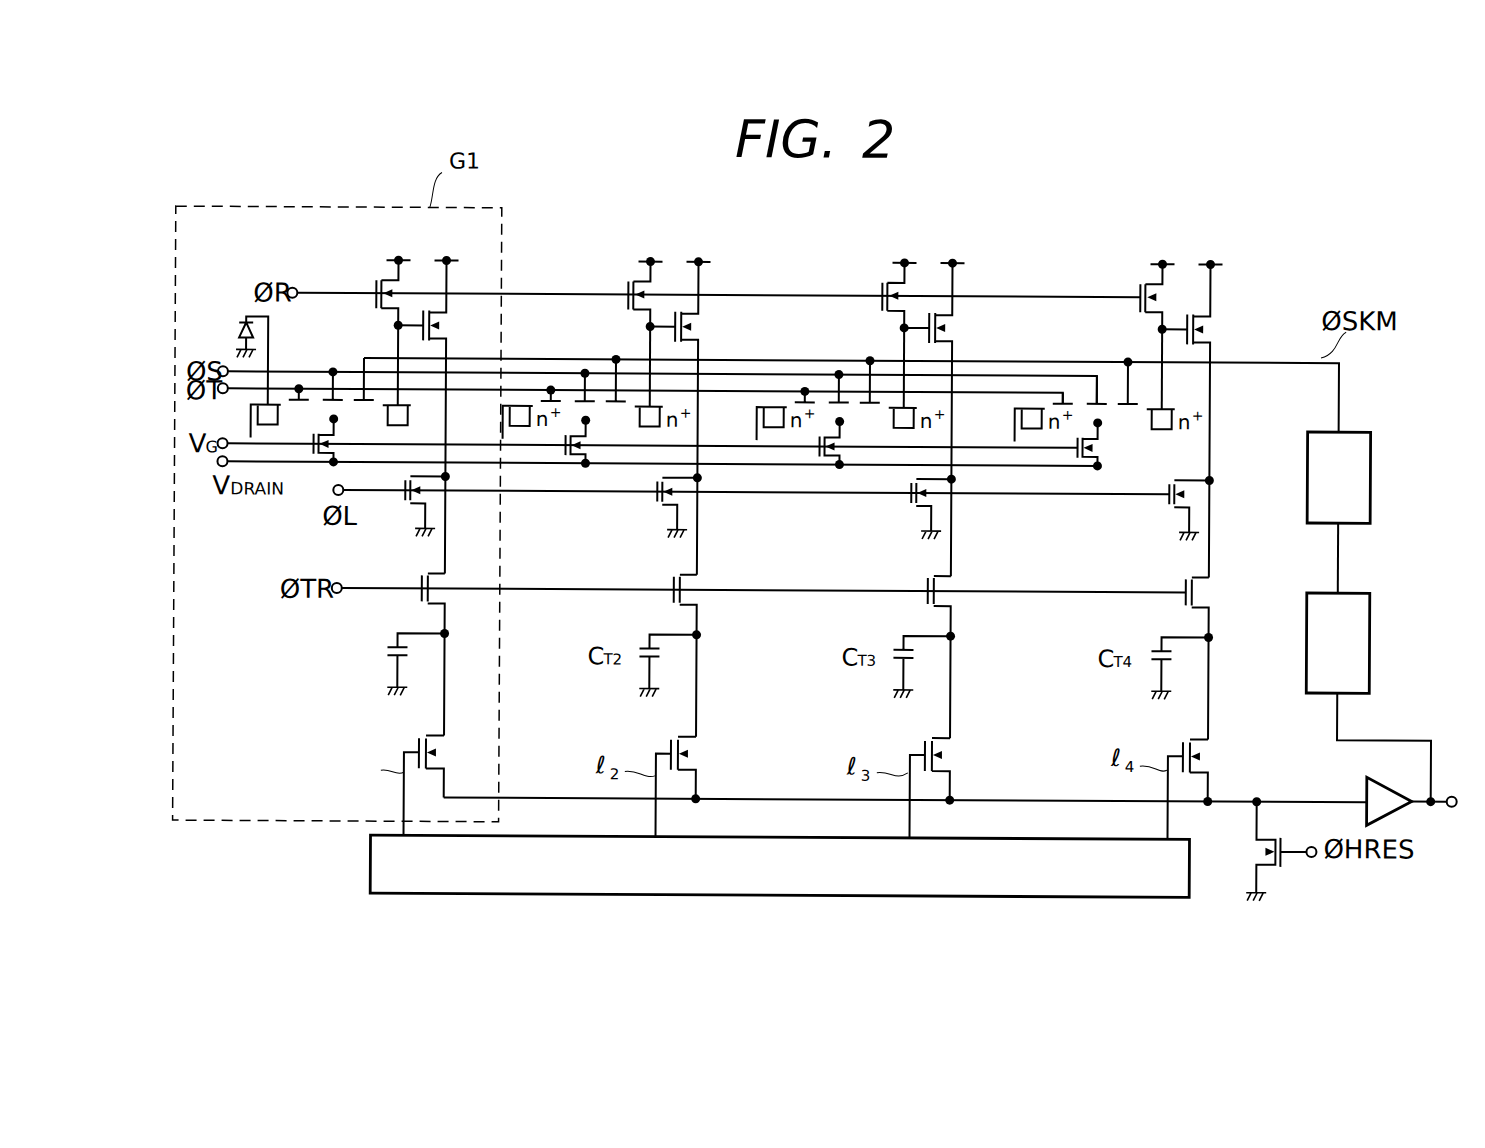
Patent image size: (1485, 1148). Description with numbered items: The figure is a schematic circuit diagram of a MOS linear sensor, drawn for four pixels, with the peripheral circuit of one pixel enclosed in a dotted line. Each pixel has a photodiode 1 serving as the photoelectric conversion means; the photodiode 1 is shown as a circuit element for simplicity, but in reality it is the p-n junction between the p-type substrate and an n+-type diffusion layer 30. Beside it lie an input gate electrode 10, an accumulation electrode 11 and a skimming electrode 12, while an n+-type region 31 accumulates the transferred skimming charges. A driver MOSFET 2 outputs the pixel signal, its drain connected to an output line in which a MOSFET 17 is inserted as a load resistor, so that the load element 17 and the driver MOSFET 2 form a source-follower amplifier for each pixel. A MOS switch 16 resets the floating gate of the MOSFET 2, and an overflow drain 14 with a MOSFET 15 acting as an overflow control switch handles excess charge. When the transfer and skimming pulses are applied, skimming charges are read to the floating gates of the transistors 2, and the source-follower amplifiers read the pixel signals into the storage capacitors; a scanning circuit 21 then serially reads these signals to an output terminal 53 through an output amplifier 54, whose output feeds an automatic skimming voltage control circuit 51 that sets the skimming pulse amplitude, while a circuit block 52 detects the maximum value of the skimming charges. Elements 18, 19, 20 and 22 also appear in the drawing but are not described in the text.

The photodiode 1 is at (240, 330).
The driver MOSFET 2 is at (447, 326).
The input gate electrode 10 is at (294, 398).
The accumulation electrode 11 is at (332, 370).
The skimming electrode 12 is at (360, 398).
The overflow drain 14 is at (218, 466).
The MOSFET serving as overflow control switch 15 is at (330, 445).
The MOS switch 16 is at (372, 287).
The MOSFET serving as load resistor 17 is at (402, 493).
The transfer MOS transistor 18 is at (418, 598).
The storage capacitor 19 is at (392, 660).
The horizontal transfer MOS transistor 20 is at (438, 750).
The scanning circuit 21 is at (372, 868).
The horizontal reset MOS transistor 22 is at (1289, 858).
The n+-type diffusion layer 30 is at (270, 426).
The n+-type region 31 is at (400, 437).
The automatic skimming voltage control circuit 51 is at (1371, 477).
The circuit for detecting maximum value of skimming charges 52 is at (1372, 638).
The output terminal 53 is at (1453, 786).
The output amplifier 54 is at (1366, 781).